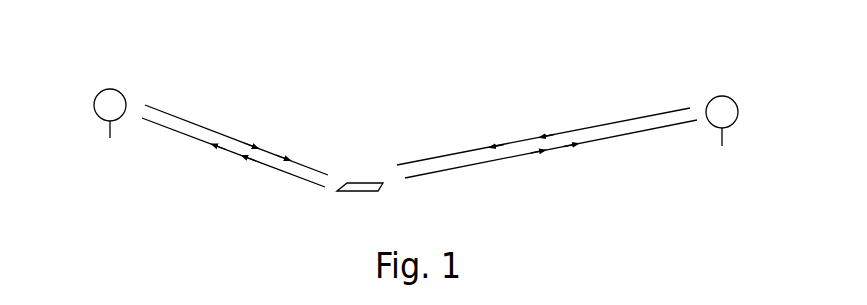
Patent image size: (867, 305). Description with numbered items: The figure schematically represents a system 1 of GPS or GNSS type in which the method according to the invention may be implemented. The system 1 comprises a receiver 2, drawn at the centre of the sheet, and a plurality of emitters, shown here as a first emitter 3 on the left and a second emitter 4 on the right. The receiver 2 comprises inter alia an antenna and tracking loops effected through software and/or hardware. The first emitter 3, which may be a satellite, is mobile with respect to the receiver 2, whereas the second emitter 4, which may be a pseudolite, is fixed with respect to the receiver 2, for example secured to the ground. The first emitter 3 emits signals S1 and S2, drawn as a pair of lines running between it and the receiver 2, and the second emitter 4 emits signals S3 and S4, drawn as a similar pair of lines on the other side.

The system 1 is at (372, 93).
The receiver 2 is at (382, 188).
The first emitter 3 is at (109, 88).
The second emitter 4 is at (722, 95).
The signal S1 is at (218, 132).
The signal S2 is at (230, 153).
The signal S3 is at (618, 120).
The signal S4 is at (630, 132).